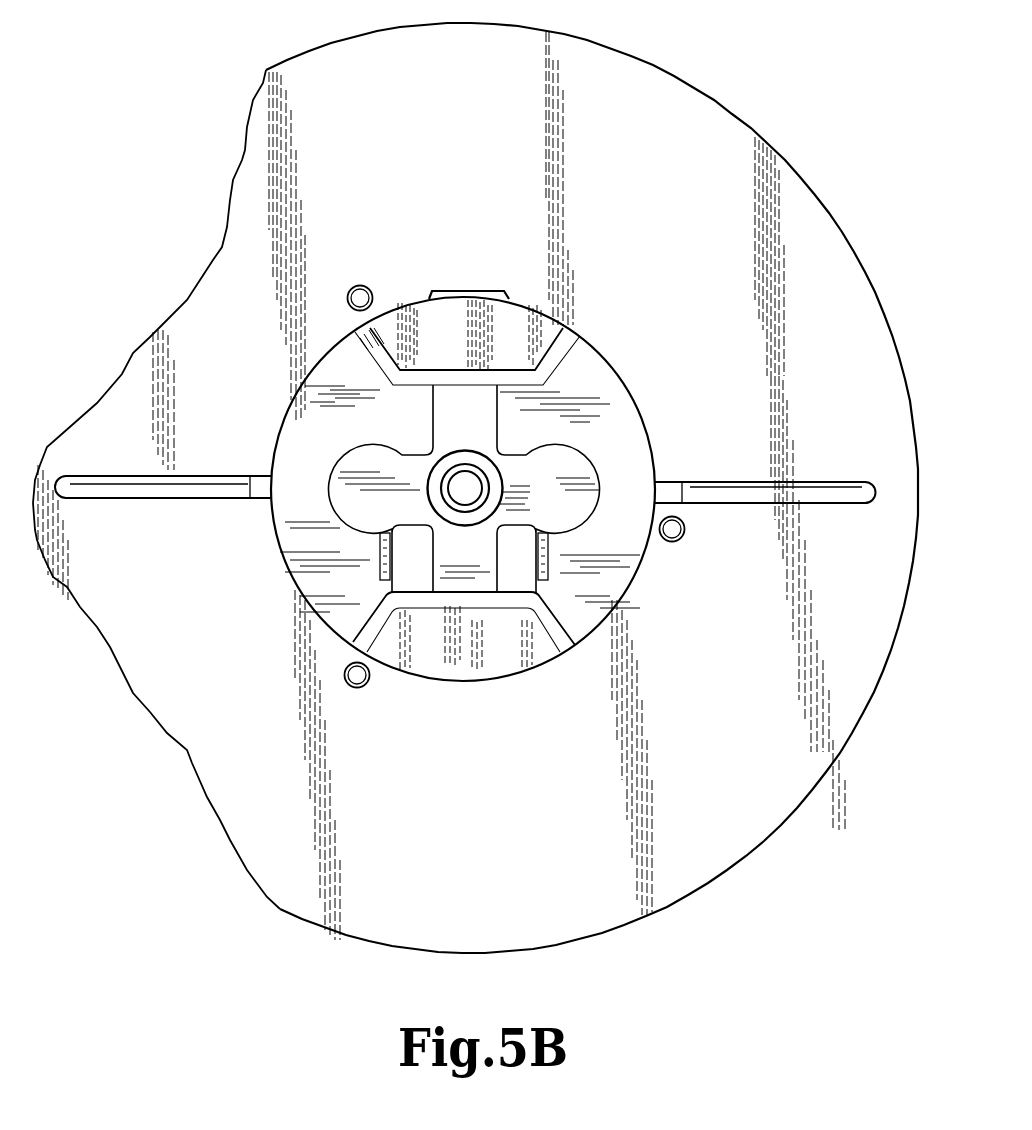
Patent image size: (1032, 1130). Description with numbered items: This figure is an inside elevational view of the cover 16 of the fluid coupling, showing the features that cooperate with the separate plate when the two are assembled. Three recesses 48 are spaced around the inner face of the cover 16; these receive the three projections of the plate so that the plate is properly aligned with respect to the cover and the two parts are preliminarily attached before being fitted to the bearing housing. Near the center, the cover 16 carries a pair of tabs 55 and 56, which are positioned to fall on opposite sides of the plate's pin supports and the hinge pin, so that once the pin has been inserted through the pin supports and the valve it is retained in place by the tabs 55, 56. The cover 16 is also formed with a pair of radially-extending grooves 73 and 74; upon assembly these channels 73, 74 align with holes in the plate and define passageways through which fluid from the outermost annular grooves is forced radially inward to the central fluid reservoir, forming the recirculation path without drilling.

The cover 16 is at (357, 946).
The recesses 48 is at (371, 300).
The tab 55 is at (380, 550).
The tab 56 is at (548, 550).
The radially-extending groove 73 is at (870, 487).
The radially-extending groove 74 is at (97, 486).